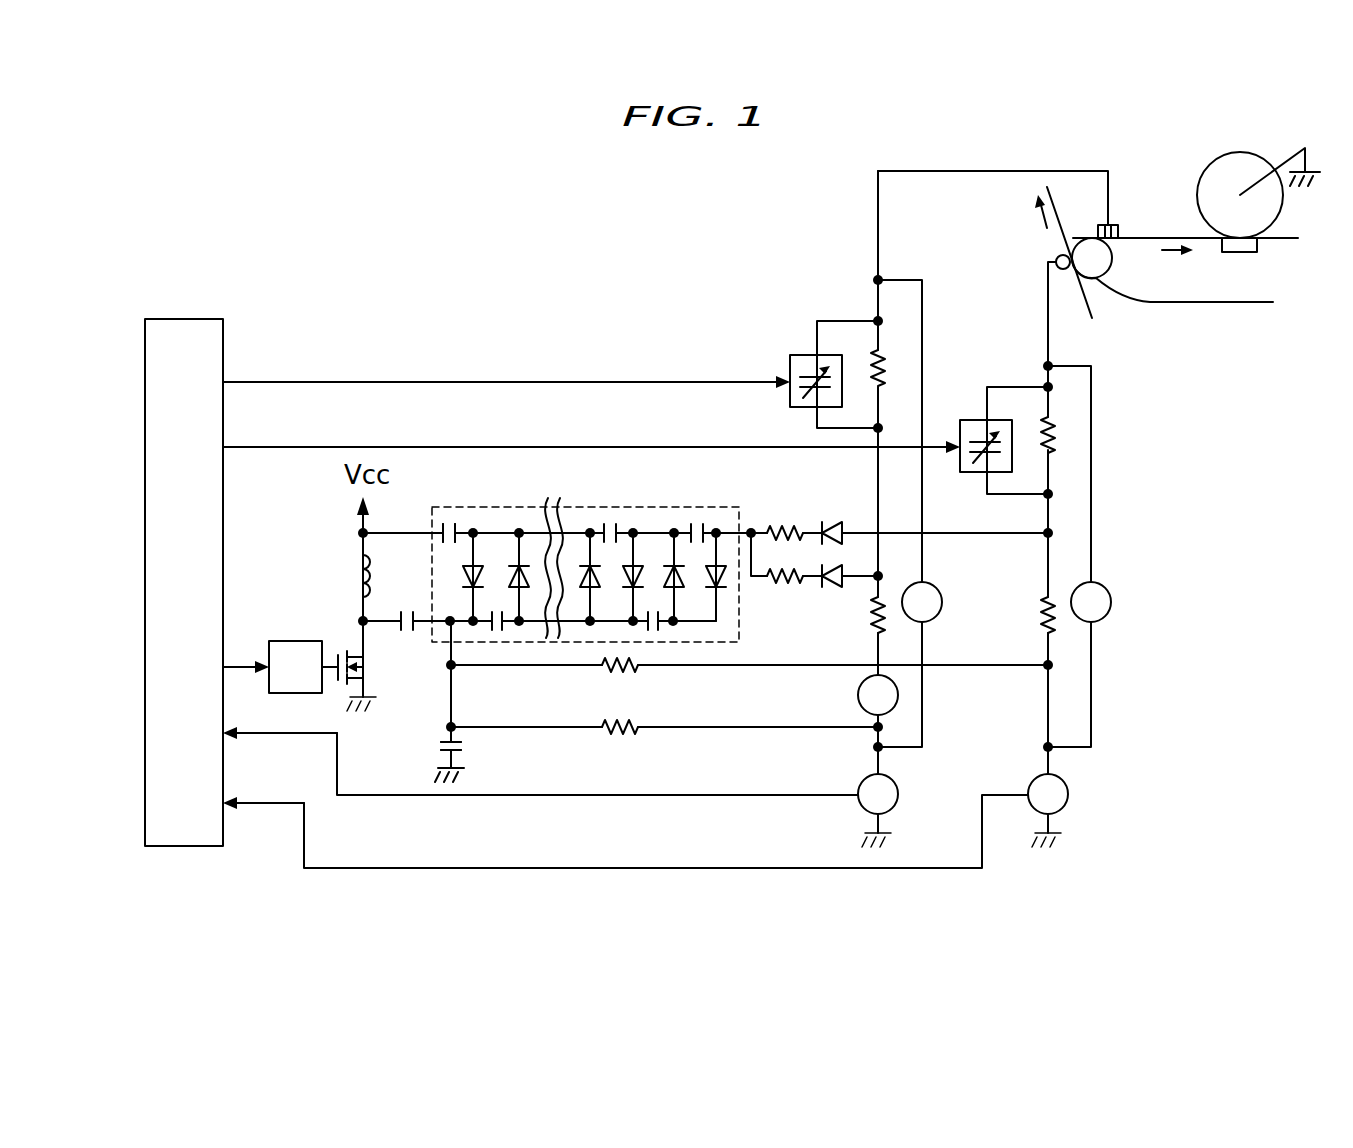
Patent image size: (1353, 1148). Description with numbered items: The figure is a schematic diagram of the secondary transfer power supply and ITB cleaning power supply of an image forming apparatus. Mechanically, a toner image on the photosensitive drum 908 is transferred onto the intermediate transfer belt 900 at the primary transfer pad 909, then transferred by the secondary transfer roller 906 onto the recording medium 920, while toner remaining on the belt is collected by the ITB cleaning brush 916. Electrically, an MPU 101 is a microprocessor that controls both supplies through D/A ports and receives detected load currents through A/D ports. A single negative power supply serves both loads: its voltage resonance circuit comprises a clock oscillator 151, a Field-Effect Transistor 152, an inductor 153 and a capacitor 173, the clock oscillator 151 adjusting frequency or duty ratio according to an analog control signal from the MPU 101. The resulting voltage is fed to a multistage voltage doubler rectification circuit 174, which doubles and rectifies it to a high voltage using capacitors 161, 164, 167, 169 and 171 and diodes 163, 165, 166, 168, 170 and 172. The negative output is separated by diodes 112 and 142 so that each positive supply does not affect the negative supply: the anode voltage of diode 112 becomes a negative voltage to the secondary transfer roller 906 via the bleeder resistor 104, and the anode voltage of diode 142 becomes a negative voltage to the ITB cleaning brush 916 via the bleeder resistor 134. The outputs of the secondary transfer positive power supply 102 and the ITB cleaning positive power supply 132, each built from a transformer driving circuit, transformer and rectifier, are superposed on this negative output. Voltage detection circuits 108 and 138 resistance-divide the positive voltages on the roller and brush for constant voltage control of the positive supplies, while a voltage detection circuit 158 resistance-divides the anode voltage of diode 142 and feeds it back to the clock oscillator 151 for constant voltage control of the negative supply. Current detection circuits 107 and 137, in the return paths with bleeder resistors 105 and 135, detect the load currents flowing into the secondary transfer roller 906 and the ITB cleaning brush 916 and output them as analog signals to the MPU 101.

The MPU 101 is at (145, 565).
The secondary transfer positive power supply 102 is at (970, 419).
The bleeder resistor 104 is at (1055, 432).
The bleeder resistor 105 is at (1042, 628).
The current detection circuit 107 is at (1068, 793).
The voltage detection circuit 108 is at (1111, 590).
The diode 112 is at (830, 521).
The ITB cleaning positive power supply 132 is at (805, 354).
The bleeder resistor 134 is at (872, 358).
The bleeder resistor 135 is at (872, 625).
The current detection circuit 137 is at (898, 793).
The voltage detection circuit 138 is at (940, 590).
The diode 142 is at (832, 589).
The clock oscillator 151 is at (295, 641).
The Field-Effect Transistor 152 is at (368, 668).
The inductor 153 is at (363, 579).
The voltage detection circuit 158 is at (858, 697).
The capacitor 161 is at (449, 510).
The diode 163 is at (462, 575).
The capacitor 164 is at (504, 632).
The diode 165 is at (506, 510).
The diode 166 is at (576, 510).
The capacitor 167 is at (608, 509).
The diode 168 is at (651, 510).
The capacitor 169 is at (664, 632).
The diode 170 is at (684, 593).
The capacitor 171 is at (695, 509).
The diode 172 is at (733, 510).
The capacitor 173 is at (438, 748).
The multistage voltage doubler rectification circuit 174 is at (549, 507).
The intermediate transfer belt 900 is at (1183, 303).
The secondary transfer roller 906 is at (1056, 258).
The photosensitive drum 908 is at (1222, 158).
The primary transfer pad 909 is at (1242, 254).
The ITB cleaning brush 916 is at (1118, 228).
The recording medium 920 is at (1091, 315).